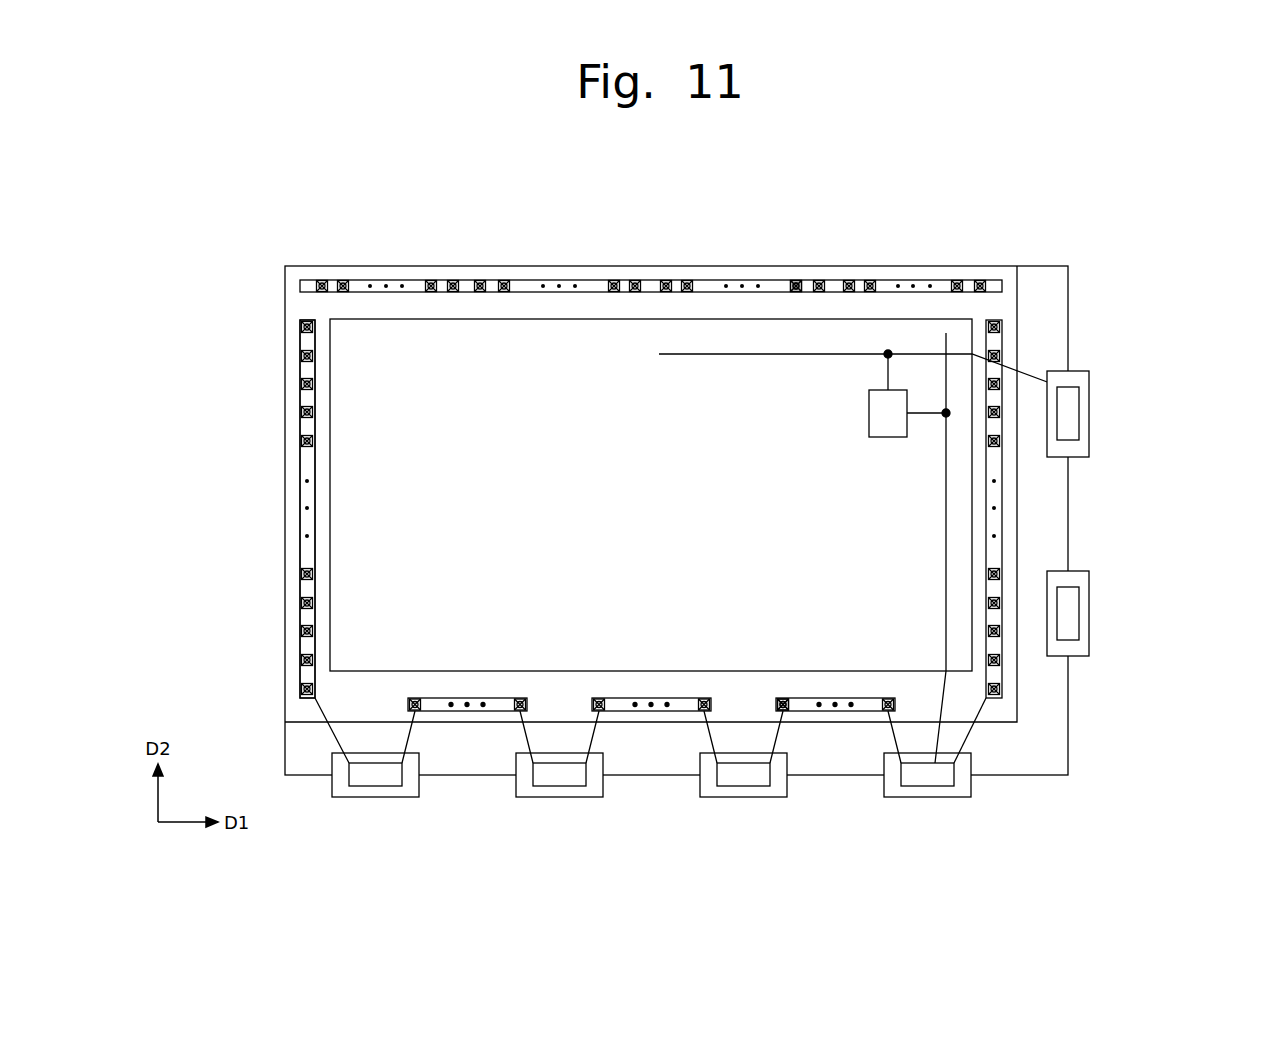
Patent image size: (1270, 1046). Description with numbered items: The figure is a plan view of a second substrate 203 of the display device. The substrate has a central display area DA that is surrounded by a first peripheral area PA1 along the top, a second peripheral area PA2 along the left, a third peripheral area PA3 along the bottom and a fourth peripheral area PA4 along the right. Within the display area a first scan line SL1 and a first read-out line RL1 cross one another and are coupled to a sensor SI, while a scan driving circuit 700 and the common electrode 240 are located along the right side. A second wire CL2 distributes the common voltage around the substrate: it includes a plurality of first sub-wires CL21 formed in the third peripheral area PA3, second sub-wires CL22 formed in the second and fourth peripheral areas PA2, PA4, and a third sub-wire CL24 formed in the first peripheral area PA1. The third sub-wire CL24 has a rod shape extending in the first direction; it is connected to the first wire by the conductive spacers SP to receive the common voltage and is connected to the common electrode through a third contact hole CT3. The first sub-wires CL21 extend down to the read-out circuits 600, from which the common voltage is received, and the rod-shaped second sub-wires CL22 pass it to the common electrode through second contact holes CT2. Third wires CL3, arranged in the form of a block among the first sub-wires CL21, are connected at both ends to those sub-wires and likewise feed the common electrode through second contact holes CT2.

The second substrate 203 is at (1068, 192).
The display area DA is at (968, 650).
The first peripheral area PA1 is at (724, 298).
The second peripheral area PA2 is at (326, 528).
The third peripheral area PA3 is at (646, 748).
The fourth peripheral area PA4 is at (1033, 541).
The third sub-wire CL24 is at (528, 280).
The conductive spacer SP is at (308, 280).
The third contact hole CT3 is at (797, 282).
The second contact hole CT2 is at (300, 441).
The first scan line SL1 is at (858, 317).
The first read-out line RL1 is at (960, 488).
The sensor SI is at (888, 413).
The scan driving circuit 700 is at (1082, 412).
The common electrode 240 is at (1017, 610).
The second sub-wire CL22 is at (300, 676).
The first sub-wire CL21 is at (967, 737).
The second wire CL2 is at (1200, 700).
The third wire CL3 is at (850, 712).
The read-out circuit 600 is at (925, 790).